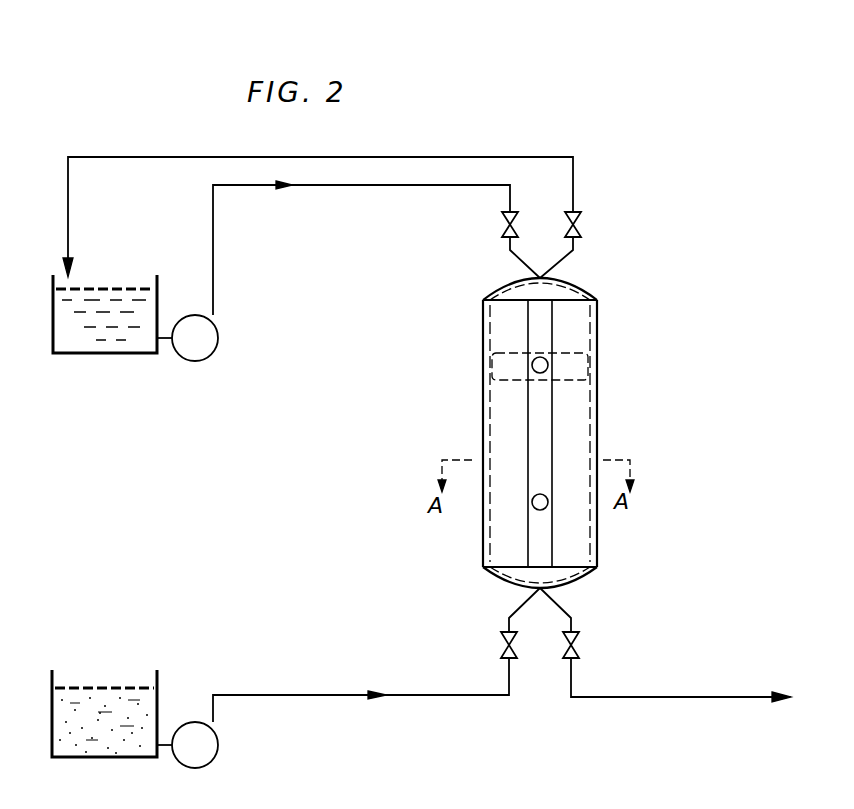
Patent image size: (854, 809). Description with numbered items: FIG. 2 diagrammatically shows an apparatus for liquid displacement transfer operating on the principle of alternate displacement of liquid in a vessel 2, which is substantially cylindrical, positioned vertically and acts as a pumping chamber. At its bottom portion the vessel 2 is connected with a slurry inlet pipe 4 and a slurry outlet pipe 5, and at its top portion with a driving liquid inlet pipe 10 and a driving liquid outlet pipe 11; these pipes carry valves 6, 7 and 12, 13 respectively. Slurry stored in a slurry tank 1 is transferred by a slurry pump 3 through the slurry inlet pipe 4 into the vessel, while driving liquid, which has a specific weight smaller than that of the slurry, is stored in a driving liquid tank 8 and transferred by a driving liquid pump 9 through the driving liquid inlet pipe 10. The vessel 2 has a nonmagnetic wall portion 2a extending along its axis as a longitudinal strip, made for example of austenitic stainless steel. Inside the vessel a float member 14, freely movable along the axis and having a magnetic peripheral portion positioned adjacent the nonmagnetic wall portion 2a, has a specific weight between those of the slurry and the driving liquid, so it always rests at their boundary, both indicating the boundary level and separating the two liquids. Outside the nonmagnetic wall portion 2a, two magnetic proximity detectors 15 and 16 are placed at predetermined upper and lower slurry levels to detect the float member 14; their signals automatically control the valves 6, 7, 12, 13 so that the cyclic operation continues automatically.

The slurry tank 1 is at (137, 686).
The vessel 2 is at (483, 520).
The nonmagnetic wall portion 2a is at (533, 448).
The slurry pump 3 is at (215, 757).
The slurry inlet pipe 4 is at (312, 697).
The slurry outlet pipe 5 is at (660, 698).
The valve 6 is at (500, 642).
The valve 7 is at (582, 644).
The driving liquid tank 8 is at (136, 288).
The driving liquid pump 9 is at (216, 332).
The driving liquid inlet pipe 10 is at (370, 185).
The driving liquid outlet pipe 11 is at (363, 157).
The valve 12 is at (501, 225).
The valve 13 is at (582, 224).
The float member 14 is at (585, 365).
The magnetic proximity detector 15 is at (532, 366).
The magnetic proximity detector 16 is at (548, 506).